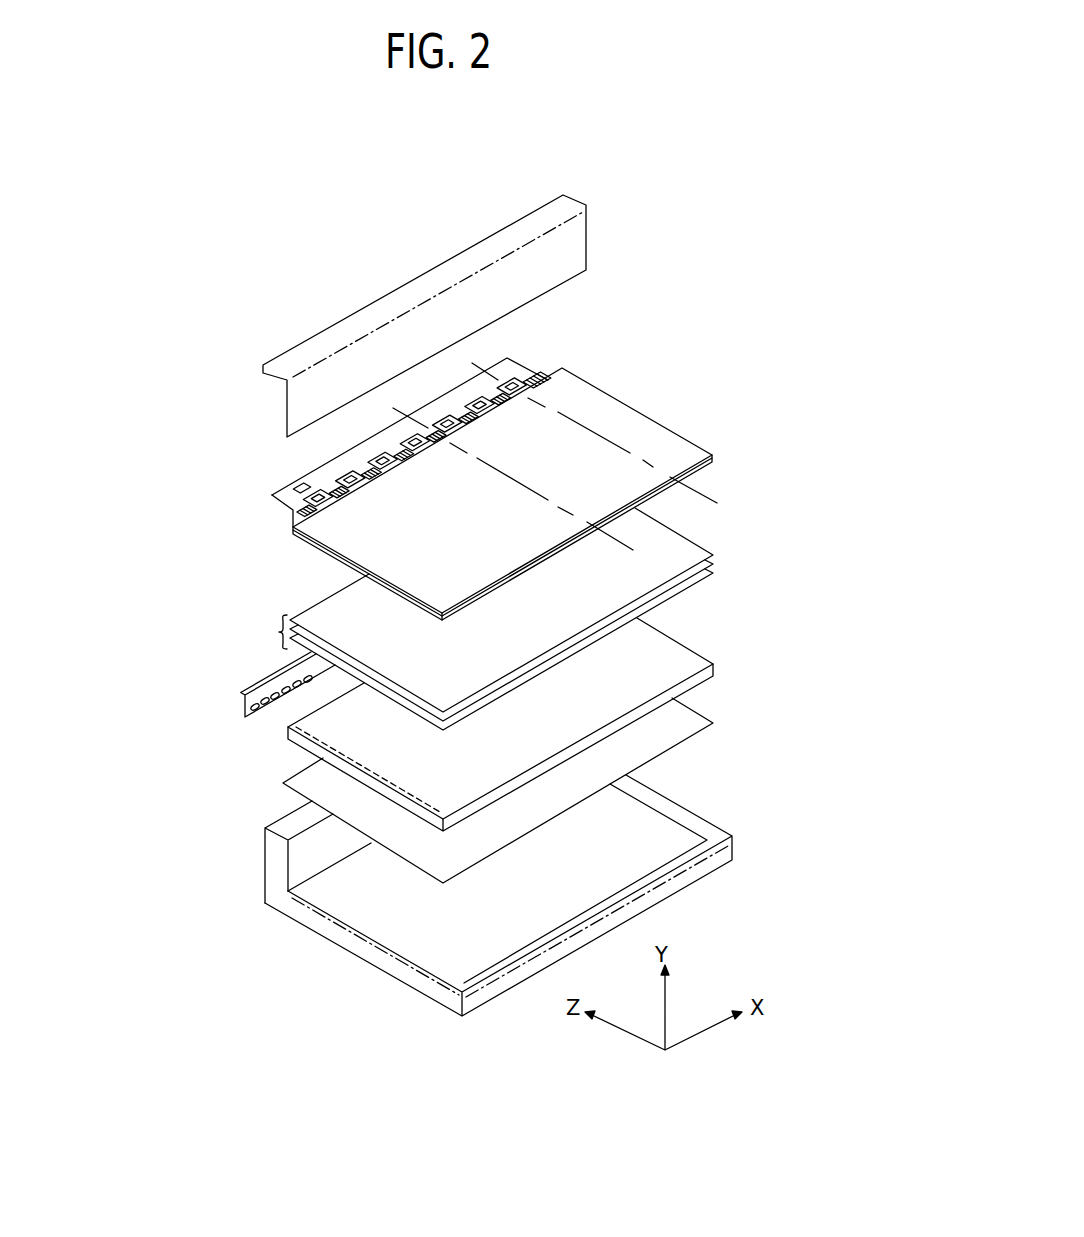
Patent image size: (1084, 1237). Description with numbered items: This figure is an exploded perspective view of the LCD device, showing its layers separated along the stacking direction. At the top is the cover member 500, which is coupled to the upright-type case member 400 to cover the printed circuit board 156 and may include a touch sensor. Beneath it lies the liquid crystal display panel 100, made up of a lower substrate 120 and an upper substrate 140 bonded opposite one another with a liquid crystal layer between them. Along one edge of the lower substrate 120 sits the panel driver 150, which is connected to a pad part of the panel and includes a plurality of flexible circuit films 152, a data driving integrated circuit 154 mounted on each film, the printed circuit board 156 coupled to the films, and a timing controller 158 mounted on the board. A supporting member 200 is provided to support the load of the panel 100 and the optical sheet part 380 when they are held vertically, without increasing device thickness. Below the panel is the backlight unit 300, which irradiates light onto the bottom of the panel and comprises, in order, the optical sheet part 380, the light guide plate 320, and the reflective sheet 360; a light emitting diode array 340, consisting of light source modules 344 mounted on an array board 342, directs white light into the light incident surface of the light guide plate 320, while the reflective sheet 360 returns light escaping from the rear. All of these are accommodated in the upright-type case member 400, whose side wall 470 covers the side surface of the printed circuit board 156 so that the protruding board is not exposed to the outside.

The liquid crystal display panel 100 is at (473, 482).
The lower substrate 120 is at (695, 478).
The upper substrate 140 is at (673, 457).
The panel driver 150 is at (337, 437).
The flexible circuit films 152 is at (322, 487).
The data driving integrated circuit 154 is at (297, 503).
The printed circuit board 156 is at (347, 462).
The timing controller 158 is at (300, 487).
The supporting member 200 is at (534, 378).
The backlight unit 300 is at (399, 695).
The light guide plate 320 is at (287, 743).
The light emitting diode array 340 is at (236, 686).
The array board 342 is at (247, 704).
The light source modules 344 is at (277, 675).
The reflective sheet 360 is at (425, 790).
The optical sheet part 380 is at (280, 634).
The upright-type case member 400 is at (453, 895).
The side wall 470 is at (273, 869).
The cover member 500 is at (440, 272).